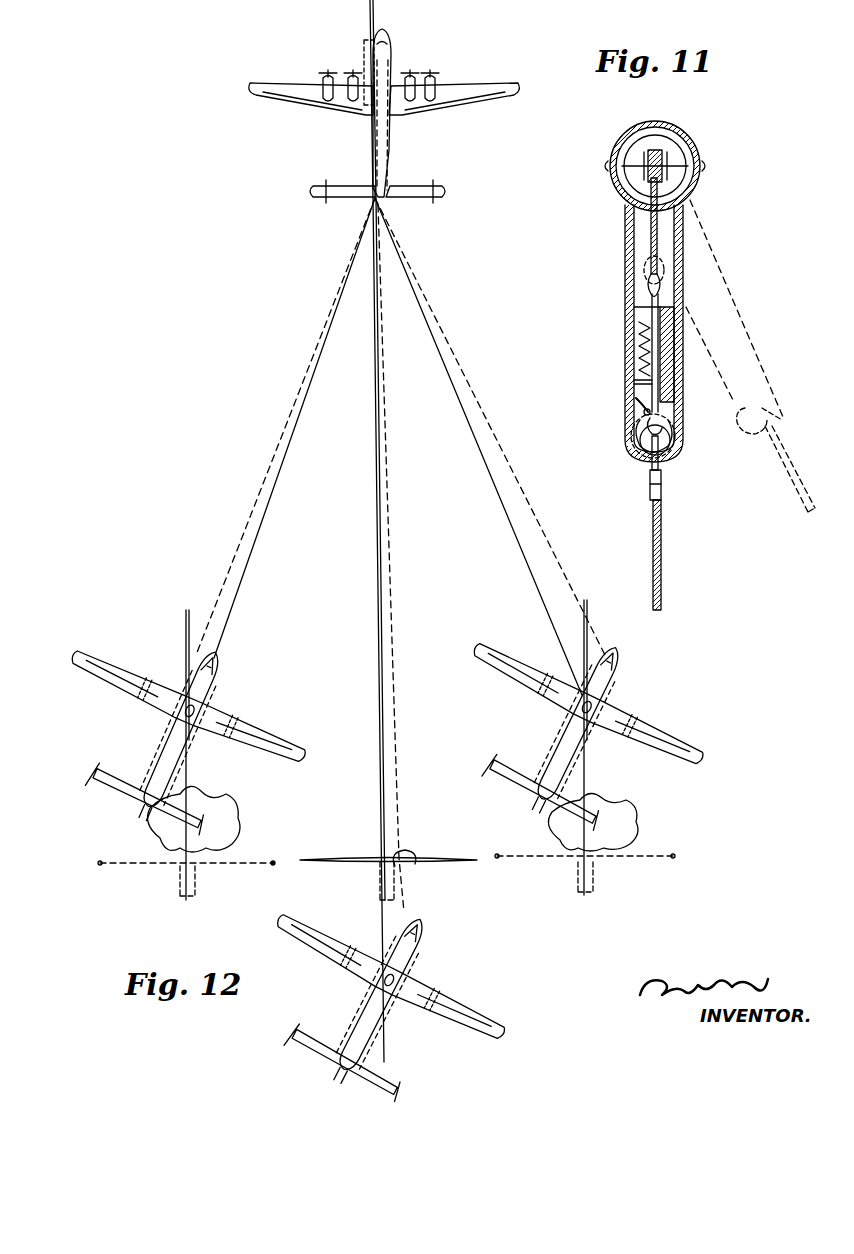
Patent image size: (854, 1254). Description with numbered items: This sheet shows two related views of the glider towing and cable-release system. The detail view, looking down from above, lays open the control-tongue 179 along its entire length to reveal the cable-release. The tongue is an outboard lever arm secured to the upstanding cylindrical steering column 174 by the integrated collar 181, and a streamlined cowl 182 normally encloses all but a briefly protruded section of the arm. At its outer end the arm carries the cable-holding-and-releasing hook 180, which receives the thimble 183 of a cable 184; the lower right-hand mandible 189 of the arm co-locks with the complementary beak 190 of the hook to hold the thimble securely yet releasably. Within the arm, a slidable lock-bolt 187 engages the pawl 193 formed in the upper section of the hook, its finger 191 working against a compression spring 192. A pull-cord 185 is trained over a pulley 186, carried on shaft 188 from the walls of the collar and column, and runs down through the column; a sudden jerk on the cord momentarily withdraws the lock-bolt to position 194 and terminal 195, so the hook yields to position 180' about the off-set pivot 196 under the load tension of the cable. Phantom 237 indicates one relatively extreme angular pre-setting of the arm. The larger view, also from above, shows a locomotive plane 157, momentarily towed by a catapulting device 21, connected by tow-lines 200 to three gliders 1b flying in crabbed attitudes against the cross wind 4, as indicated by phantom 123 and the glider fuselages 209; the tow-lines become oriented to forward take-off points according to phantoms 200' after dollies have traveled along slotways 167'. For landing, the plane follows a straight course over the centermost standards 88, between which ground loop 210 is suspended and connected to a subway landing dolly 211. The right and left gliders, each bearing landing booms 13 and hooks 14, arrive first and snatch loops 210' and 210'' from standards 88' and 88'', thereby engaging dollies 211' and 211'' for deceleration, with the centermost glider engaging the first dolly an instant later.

In FIG. 12, the catapulting device 21 is at (357, 119).
In FIG. 12, the locomotive plane 157 is at (404, 59).
In FIG. 12, the phantom 123 is at (364, 53).
In FIG. 12, the cross wind 4 is at (497, 148).
In FIG. 12, the tow-lines 200 is at (405, 531).
In FIG. 12, the phantoms of tow-lines 200' is at (340, 558).
In FIG. 12, the landing booms 13 is at (190, 764).
In FIG. 12, the hooks 14 is at (188, 794).
In FIG. 12, the streamlined cowl 182 is at (183, 719).
In FIG. 12, the slotways 167' is at (409, 803).
In FIG. 12, the glider fuselages 209 is at (178, 676).
In FIG. 12, the gliders 1b is at (227, 647).
In FIG. 12, the ground loop 210 is at (421, 869).
In FIG. 12, the loop 210' is at (625, 822).
In FIG. 12, the loop 210'' is at (161, 819).
In FIG. 12, the centermost standards 88 is at (390, 839).
In FIG. 12, the standards 88' is at (611, 869).
In FIG. 12, the standards 88'' is at (183, 882).
In FIG. 12, the subway landing dolly 211 is at (358, 881).
In FIG. 12, the dolly 211' is at (616, 883).
In FIG. 12, the dolly 211'' is at (179, 895).
In FIG. 11, the control-tongue 179 is at (614, 252).
In FIG. 11, the pulley 186 is at (690, 145).
In FIG. 11, the shaft 188 is at (623, 162).
In FIG. 11, the integrated collar 181 is at (609, 179).
In FIG. 11, the steering column 174 is at (692, 178).
In FIG. 11, the pull-cord 185 is at (645, 222).
In FIG. 11, the terminal 195 is at (645, 262).
In FIG. 11, the slidable lock-bolt 187 is at (649, 316).
In FIG. 11, the compression spring 192 is at (636, 348).
In FIG. 11, the finger 191 is at (632, 379).
In FIG. 11, the position 194 is at (636, 406).
In FIG. 11, the pawl 193 is at (655, 418).
In FIG. 11, the hook released position 180' is at (617, 436).
In FIG. 11, the cable-holding-and-releasing hook 180 is at (615, 444).
In FIG. 11, the off-set pivot 196 is at (664, 437).
In FIG. 11, the mandible 189 is at (671, 450).
In FIG. 11, the beak 190 is at (662, 474).
In FIG. 11, the thimble 183 is at (648, 484).
In FIG. 11, the cable 184 is at (661, 540).
In FIG. 11, the phantom 237 is at (728, 274).